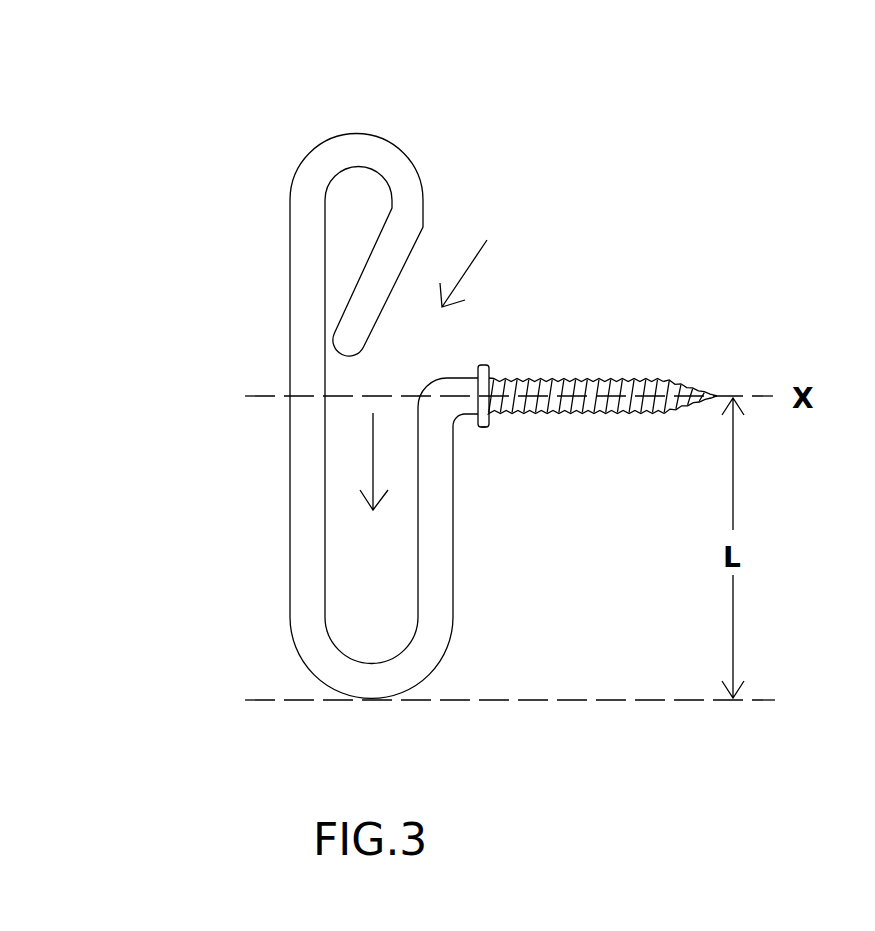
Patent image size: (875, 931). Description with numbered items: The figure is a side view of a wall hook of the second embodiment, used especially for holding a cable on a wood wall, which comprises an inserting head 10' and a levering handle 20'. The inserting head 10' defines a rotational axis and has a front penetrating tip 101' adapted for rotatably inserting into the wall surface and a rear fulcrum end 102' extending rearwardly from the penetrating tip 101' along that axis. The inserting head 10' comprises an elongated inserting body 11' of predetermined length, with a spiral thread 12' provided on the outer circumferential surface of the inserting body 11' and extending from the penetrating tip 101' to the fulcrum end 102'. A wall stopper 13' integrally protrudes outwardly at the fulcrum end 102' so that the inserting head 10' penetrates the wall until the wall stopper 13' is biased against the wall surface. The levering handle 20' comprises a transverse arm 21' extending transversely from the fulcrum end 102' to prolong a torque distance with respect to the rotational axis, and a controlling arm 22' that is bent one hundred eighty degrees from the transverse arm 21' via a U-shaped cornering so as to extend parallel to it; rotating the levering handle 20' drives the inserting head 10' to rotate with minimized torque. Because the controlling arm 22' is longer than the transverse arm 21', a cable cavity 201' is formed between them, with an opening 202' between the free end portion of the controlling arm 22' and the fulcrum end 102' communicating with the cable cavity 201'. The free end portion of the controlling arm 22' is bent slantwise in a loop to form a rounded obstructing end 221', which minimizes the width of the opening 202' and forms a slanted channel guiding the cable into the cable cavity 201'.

The levering handle 20' is at (359, 390).
The rounded obstructing end 221' is at (413, 106).
The opening 202' is at (462, 231).
The cable cavity 201' is at (257, 461).
The controlling arm 22' is at (228, 409).
The transverse arm 21' is at (431, 588).
The inserting head 10' is at (672, 353).
The wall stopper 13' is at (571, 326).
The rear fulcrum end 102' is at (546, 503).
The elongated inserting body 11' is at (604, 442).
The spiral thread 12' is at (590, 470).
The front penetrating tip 101' is at (752, 342).